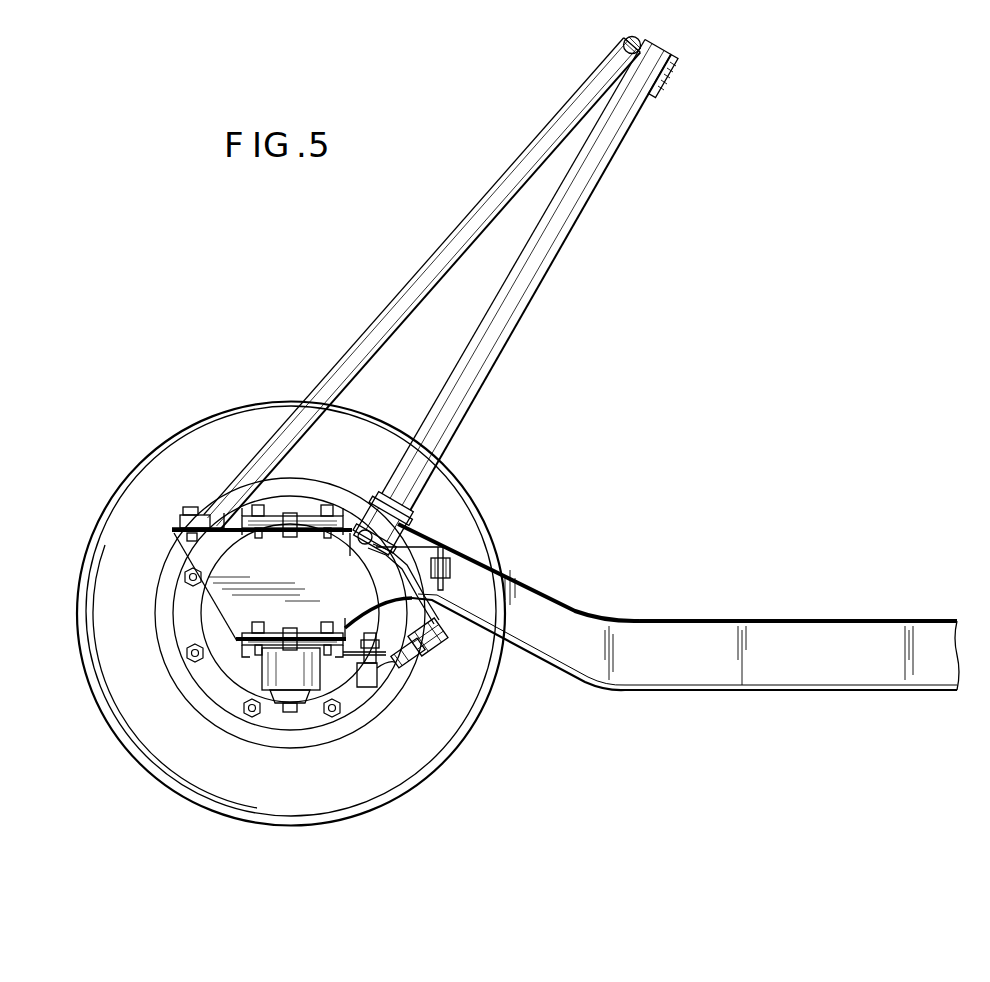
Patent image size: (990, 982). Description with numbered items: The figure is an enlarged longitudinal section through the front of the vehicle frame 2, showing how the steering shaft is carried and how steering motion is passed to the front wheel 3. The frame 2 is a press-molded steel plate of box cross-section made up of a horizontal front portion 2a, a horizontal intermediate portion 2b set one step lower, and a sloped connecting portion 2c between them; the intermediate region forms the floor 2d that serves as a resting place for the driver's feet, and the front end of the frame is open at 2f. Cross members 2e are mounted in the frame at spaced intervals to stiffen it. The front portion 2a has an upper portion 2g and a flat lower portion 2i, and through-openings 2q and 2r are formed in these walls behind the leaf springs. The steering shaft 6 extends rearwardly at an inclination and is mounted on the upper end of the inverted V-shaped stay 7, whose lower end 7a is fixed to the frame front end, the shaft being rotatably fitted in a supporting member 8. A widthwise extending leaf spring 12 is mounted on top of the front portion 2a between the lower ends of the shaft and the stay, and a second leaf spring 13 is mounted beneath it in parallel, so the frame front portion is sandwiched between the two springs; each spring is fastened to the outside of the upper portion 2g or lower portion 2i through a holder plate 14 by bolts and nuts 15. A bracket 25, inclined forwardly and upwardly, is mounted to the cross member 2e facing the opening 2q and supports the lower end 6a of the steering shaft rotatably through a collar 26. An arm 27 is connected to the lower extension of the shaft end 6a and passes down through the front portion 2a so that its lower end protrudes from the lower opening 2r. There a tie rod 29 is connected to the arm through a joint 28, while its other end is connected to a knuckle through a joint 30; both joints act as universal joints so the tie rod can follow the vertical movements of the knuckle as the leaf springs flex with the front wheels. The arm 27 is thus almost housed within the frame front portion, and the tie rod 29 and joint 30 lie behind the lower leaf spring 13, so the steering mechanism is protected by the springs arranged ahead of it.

The frame 2 is at (652, 654).
The horizontal front portion 2a is at (217, 527).
The horizontal intermediate portion 2b is at (877, 618).
The sloped connecting portion 2c is at (540, 594).
The floor 2d is at (778, 603).
The cross member 2e is at (460, 553).
The opened front end 2f is at (235, 607).
The upper portion 2g is at (237, 533).
The flat lower portion 2i is at (237, 652).
The through-opening 2q is at (342, 544).
The through-opening 2r is at (350, 624).
The front wheel 3 is at (265, 418).
The steering shaft 6 is at (594, 180).
The lower end of steering shaft 6a is at (393, 497).
The inverted V-shaped stay 7 is at (546, 143).
The lower end of stay 7a is at (187, 527).
The supporting member 8 is at (671, 63).
The leaf spring 12 is at (290, 537).
The leaf spring 13 is at (305, 700).
The holder plate 14 is at (310, 523).
The bolts and nuts 15 is at (260, 538).
The bracket 25 is at (420, 537).
The collar 26 is at (350, 500).
The arm 27 is at (443, 587).
The joint 28 is at (443, 650).
The tie rod 29 is at (405, 672).
The joint 30 is at (372, 675).